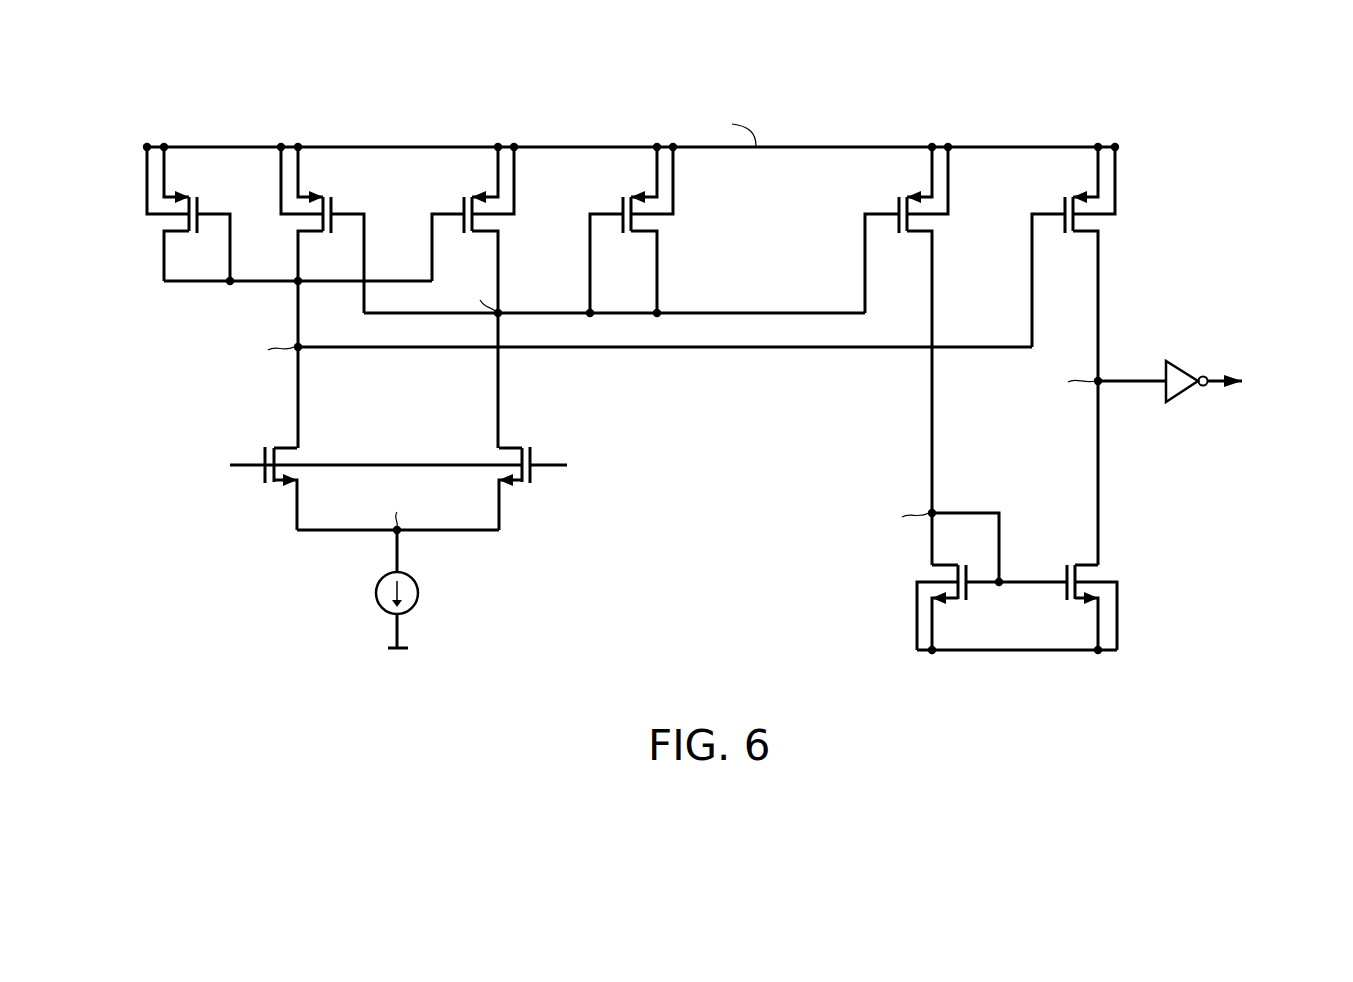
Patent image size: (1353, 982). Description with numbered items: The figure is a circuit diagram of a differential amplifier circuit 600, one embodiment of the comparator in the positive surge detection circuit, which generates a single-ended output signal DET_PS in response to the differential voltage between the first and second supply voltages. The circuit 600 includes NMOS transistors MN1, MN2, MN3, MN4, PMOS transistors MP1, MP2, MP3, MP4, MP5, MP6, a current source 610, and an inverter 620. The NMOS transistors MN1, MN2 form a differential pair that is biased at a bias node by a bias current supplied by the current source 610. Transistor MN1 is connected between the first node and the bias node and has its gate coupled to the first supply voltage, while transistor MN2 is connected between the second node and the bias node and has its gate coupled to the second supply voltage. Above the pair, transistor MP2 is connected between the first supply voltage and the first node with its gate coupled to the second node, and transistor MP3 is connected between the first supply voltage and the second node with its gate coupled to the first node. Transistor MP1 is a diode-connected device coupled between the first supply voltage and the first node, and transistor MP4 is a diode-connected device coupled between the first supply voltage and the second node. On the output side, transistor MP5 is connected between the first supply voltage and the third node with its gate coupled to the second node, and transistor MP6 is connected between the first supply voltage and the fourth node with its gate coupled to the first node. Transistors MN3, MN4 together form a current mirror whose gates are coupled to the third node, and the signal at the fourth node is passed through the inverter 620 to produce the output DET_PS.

The differential amplifier circuit 600 is at (97, 76).
The current source 610 is at (419, 596).
The inverter 620 is at (1182, 393).
The diode-connected PMOS transistor MP1 is at (186, 218).
The PMOS transistor MP2 is at (321, 218).
The PMOS transistor MP3 is at (476, 218).
The diode-connected PMOS transistor MP4 is at (636, 218).
The PMOS transistor MP5 is at (911, 218).
The PMOS transistor MP6 is at (1077, 218).
The NMOS transistor MN1 is at (277, 456).
The NMOS transistor MN2 is at (519, 455).
The NMOS transistor MN3 is at (955, 579).
The NMOS transistor MN4 is at (1077, 579).